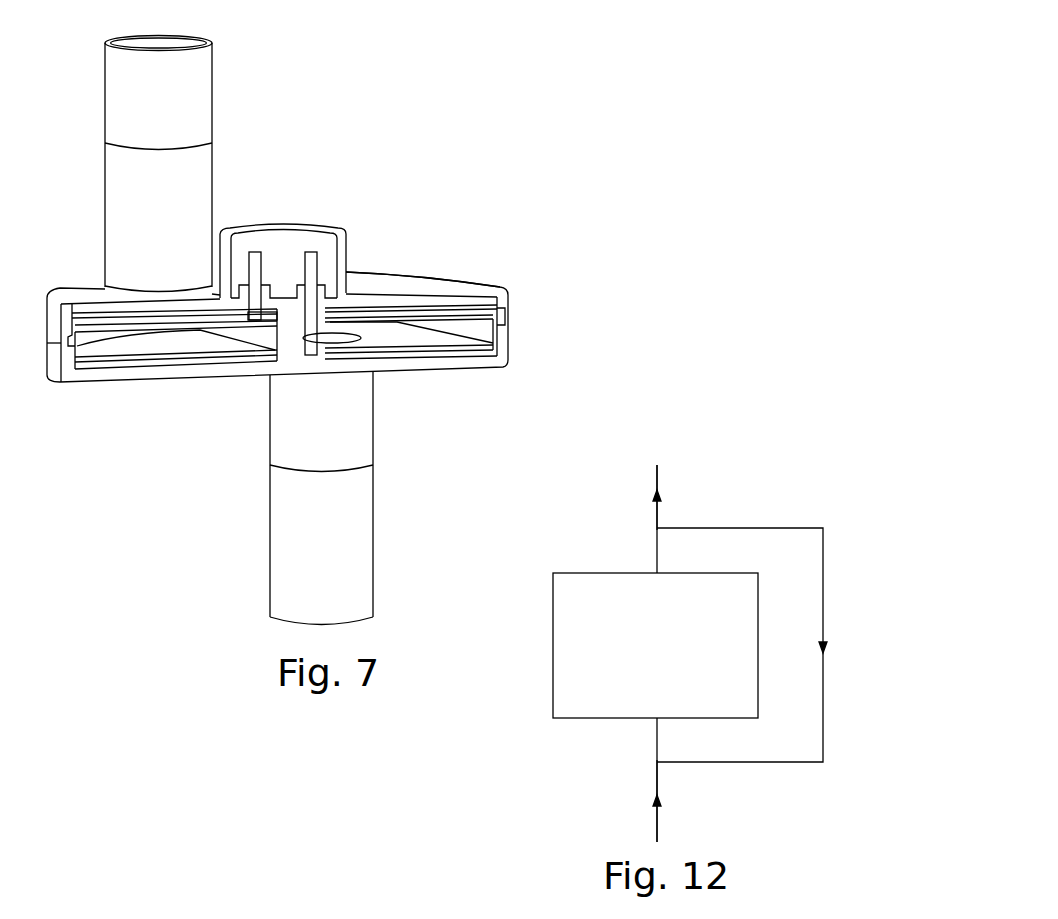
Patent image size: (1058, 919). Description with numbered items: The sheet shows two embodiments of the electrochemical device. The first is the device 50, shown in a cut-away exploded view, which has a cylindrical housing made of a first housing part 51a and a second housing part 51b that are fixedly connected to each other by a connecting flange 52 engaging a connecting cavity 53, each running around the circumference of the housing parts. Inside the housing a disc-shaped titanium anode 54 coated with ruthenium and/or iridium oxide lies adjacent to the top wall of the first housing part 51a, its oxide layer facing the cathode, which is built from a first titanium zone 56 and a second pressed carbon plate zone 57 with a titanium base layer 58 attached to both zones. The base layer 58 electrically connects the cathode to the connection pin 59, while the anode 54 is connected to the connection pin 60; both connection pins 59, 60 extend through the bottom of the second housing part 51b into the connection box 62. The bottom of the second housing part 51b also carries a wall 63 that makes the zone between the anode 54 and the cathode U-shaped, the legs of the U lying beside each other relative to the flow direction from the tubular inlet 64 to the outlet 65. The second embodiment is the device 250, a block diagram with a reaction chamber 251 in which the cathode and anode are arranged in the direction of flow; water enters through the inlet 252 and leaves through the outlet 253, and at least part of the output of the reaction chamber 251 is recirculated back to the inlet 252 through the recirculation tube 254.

In FIG. 7, the device 50 is at (433, 125).
In FIG. 7, the first housing part 51a is at (510, 347).
In FIG. 7, the second housing part 51b is at (452, 285).
In FIG. 7, the connecting flange 52 is at (510, 318).
In FIG. 7, the connecting cavity 53 is at (505, 338).
In FIG. 7, the anode 54 is at (410, 338).
In FIG. 7, the first titanium zone 56 is at (482, 312).
In FIG. 7, the second pressed carbon plate zone 57 is at (88, 335).
In FIG. 7, the titanium base layer 58 is at (113, 325).
In FIG. 7, the connection pin 59 is at (255, 250).
In FIG. 7, the connection pin 60 is at (309, 250).
In FIG. 7, the connection box 62 is at (344, 230).
In FIG. 7, the wall 63 is at (292, 345).
In FIG. 7, the inlet 64 is at (357, 548).
In FIG. 7, the outlet 65 is at (200, 82).
In FIG. 12, the device 250 is at (827, 498).
In FIG. 12, the reaction chamber 251 is at (568, 642).
In FIG. 12, the inlet 252 is at (656, 820).
In FIG. 12, the outlet 253 is at (657, 515).
In FIG. 12, the recirculation tube 254 is at (823, 600).